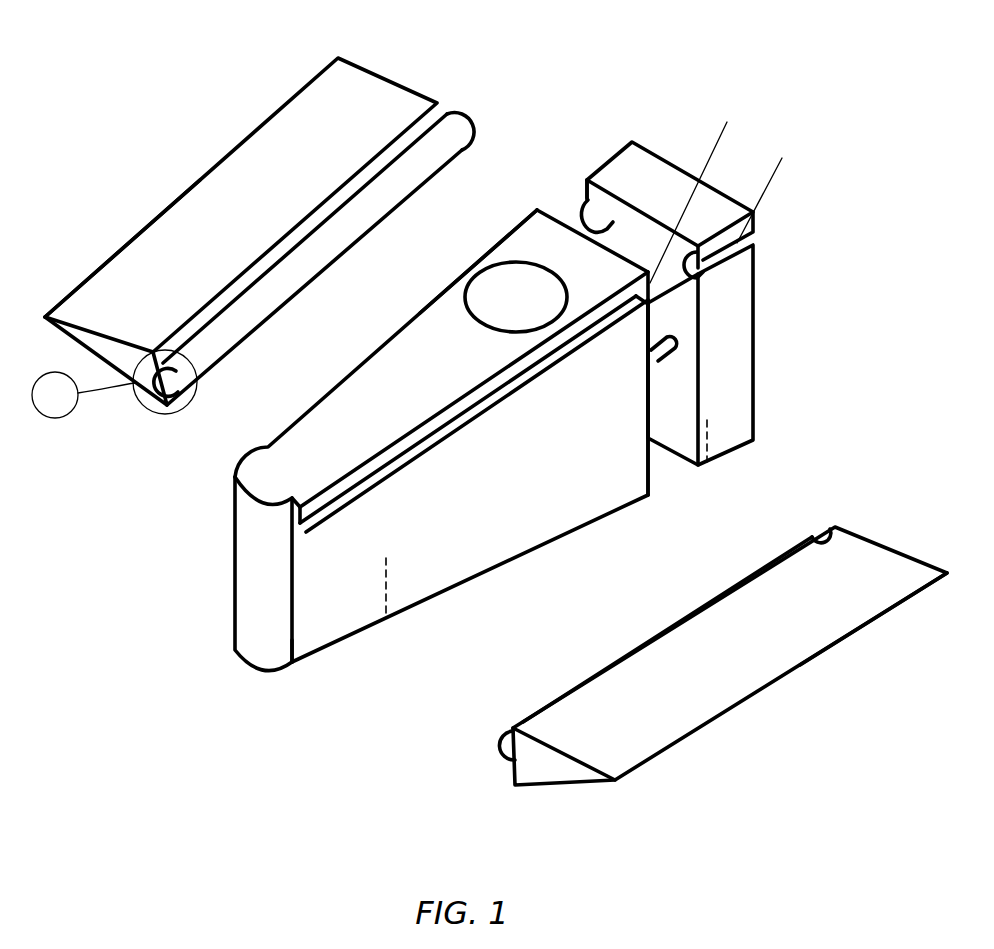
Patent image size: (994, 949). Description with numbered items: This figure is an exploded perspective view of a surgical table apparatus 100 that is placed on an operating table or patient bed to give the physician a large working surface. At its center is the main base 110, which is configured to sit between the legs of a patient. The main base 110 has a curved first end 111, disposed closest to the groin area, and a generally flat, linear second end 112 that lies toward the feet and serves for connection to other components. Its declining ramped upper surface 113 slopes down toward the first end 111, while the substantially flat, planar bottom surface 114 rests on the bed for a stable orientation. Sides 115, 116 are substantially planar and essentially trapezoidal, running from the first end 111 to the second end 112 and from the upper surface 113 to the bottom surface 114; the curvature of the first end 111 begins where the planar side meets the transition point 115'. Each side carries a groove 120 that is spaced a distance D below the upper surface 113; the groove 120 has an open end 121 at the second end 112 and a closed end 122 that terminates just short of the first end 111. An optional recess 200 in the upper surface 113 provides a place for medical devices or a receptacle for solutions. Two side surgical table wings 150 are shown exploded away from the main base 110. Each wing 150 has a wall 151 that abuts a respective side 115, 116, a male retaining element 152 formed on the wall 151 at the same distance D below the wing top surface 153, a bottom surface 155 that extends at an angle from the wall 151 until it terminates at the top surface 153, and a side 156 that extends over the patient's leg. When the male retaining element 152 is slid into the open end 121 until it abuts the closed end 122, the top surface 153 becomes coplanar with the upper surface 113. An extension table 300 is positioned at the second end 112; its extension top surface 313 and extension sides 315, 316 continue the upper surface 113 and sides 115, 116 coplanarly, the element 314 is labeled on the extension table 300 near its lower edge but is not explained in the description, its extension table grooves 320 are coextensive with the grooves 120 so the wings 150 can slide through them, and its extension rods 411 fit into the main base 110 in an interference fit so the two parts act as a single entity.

The surgical table apparatus 100 is at (755, 109).
The main base 110 is at (331, 645).
The first end 111 is at (245, 572).
The second end 112 is at (550, 207).
The declining ramped upper surface 113 is at (393, 375).
The substantially flat, planar bottom surface 114 is at (387, 617).
The side 115 is at (629, 426).
The transition point 115' is at (236, 699).
The side 116 is at (406, 324).
The groove 120 is at (420, 453).
The open end 121 is at (648, 306).
The closed end 122 is at (283, 522).
The side surgical table wing 150 is at (256, 188).
The wall 151 is at (347, 193).
The male retaining element 152 is at (447, 143).
The top surface 153 is at (247, 237).
The bottom surface 155 is at (58, 341).
The side 156 is at (130, 238).
The recess 200 is at (500, 309).
The extension table 300 is at (733, 352).
The extension top surface 313 is at (650, 204).
The hidden edge 314 is at (710, 462).
The extension side 315 is at (757, 418).
The extension side 316 is at (588, 208).
The extension table groove 320 is at (622, 203).
The extension rod 411 is at (664, 364).
The distance D is at (443, 113).